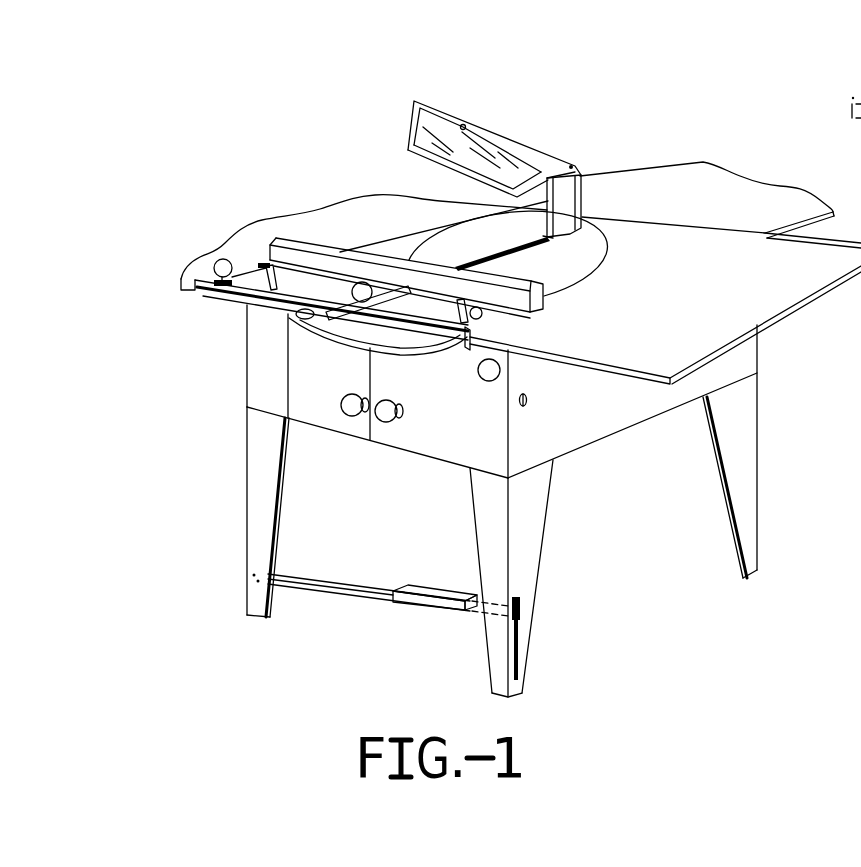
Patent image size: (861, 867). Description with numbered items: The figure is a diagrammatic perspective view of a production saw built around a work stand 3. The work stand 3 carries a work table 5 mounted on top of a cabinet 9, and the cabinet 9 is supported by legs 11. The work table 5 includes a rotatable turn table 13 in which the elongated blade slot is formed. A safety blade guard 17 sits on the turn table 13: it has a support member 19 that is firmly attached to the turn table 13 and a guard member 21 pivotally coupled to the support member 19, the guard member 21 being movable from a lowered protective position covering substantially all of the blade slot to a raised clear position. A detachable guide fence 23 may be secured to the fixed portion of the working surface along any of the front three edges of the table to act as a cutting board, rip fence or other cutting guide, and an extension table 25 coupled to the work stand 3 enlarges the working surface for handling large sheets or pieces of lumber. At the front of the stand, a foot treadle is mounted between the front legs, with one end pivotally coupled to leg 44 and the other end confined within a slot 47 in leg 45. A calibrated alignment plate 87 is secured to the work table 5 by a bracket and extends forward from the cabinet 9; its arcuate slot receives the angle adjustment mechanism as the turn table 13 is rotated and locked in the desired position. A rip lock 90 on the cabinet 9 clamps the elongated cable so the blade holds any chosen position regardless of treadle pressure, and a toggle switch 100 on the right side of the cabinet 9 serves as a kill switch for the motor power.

The work stand 3 is at (312, 165).
The work table 5 is at (672, 237).
The cabinet 9 is at (633, 412).
The legs 11 is at (740, 427).
The turn table 13 is at (585, 240).
The safety blade guard 17 is at (543, 130).
The support member 19 is at (562, 208).
The guard member 21 is at (437, 124).
The guide fence 23 is at (280, 260).
The extension table 25 is at (736, 197).
The leg 44 is at (260, 551).
The leg 45 is at (523, 578).
The slot 47 is at (518, 662).
The calibrated alignment plate 87 is at (327, 342).
The rip lock 90 is at (482, 378).
The toggle switch 100 is at (528, 405).